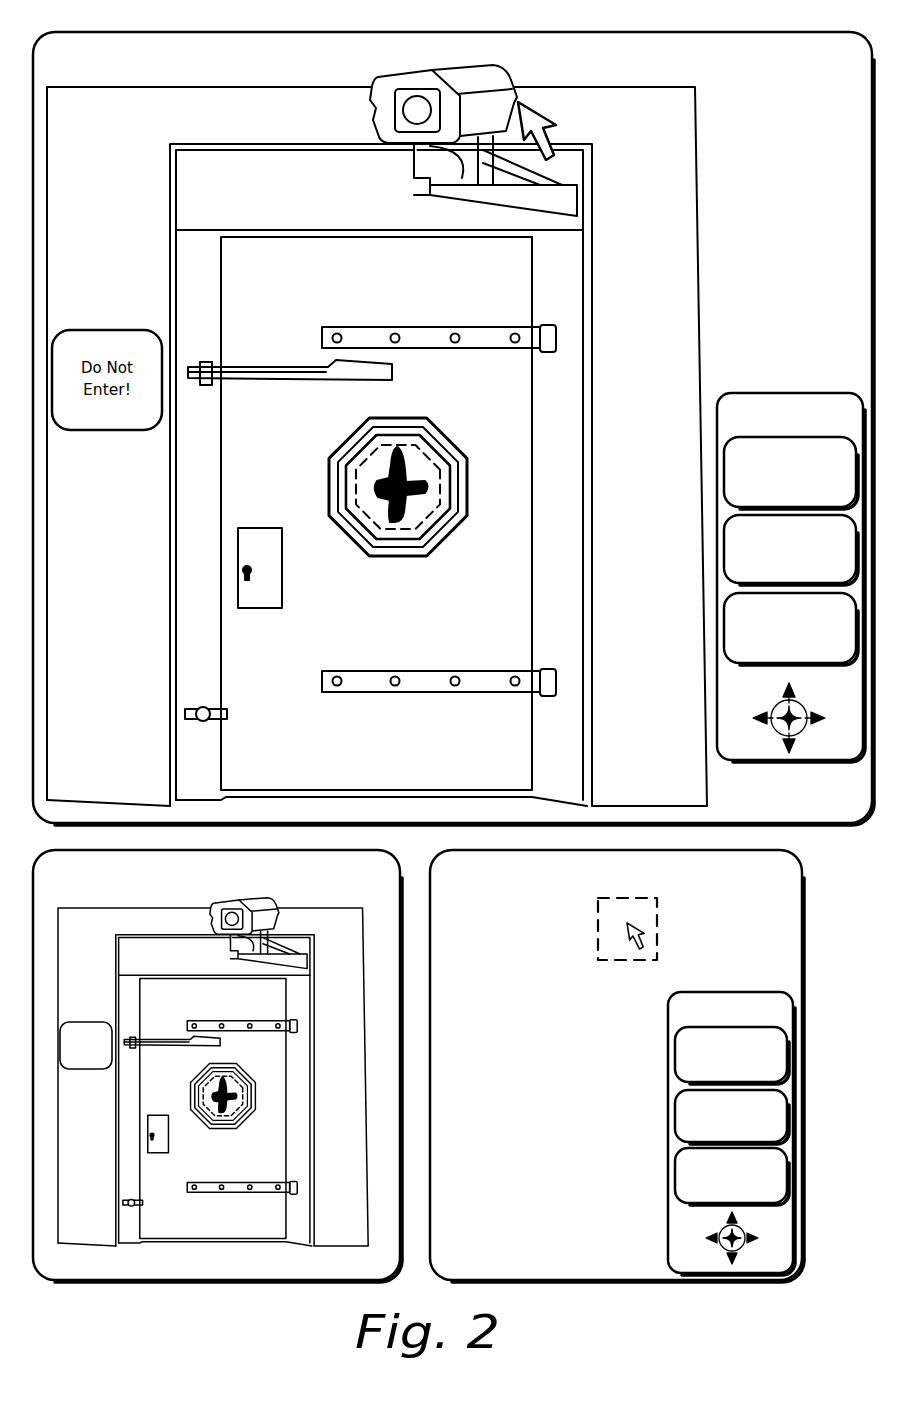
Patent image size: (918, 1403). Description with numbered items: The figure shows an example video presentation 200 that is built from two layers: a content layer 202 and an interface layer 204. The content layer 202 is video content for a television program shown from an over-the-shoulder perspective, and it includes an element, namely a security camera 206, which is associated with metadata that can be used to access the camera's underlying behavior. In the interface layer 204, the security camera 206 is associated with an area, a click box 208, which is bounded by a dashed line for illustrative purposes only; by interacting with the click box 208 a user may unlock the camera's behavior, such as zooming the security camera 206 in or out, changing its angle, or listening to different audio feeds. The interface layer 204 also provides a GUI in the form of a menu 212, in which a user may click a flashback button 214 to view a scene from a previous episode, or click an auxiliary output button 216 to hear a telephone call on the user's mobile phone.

The video presentation 200 is at (560, 62).
The content layer 202 is at (304, 882).
The interface layer 204 is at (710, 881).
The security camera 206 is at (520, 92).
The click box 208 is at (598, 927).
The menu 212 is at (768, 1021).
The flashback button 214 is at (772, 572).
The auxiliary output button 216 is at (772, 652).